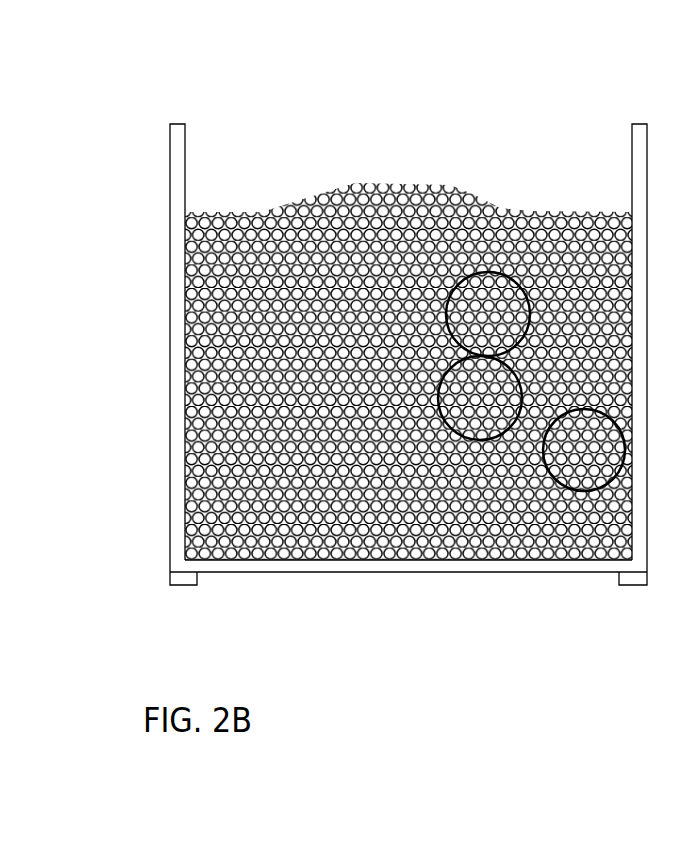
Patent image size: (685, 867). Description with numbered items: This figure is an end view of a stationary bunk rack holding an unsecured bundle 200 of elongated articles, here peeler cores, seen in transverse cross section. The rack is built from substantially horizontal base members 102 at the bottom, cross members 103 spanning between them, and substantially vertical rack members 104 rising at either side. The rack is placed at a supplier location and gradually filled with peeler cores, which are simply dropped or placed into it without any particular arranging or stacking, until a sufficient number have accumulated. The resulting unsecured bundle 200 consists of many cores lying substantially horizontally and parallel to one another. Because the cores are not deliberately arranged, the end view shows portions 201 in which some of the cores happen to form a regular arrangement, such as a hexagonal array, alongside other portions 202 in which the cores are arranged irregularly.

The unsecured bundle 200 is at (379, 120).
The rack member 104 is at (178, 135).
The cross member 103 is at (321, 567).
The base member 102 is at (183, 585).
The portion of regular arrangement 201 is at (497, 273).
The portion of irregular arrangement 202 is at (478, 441).